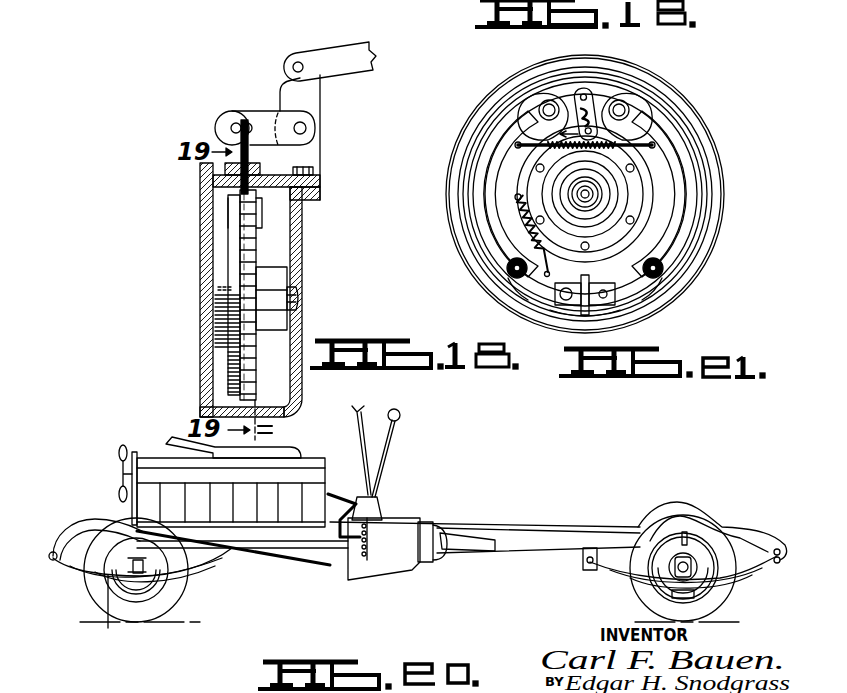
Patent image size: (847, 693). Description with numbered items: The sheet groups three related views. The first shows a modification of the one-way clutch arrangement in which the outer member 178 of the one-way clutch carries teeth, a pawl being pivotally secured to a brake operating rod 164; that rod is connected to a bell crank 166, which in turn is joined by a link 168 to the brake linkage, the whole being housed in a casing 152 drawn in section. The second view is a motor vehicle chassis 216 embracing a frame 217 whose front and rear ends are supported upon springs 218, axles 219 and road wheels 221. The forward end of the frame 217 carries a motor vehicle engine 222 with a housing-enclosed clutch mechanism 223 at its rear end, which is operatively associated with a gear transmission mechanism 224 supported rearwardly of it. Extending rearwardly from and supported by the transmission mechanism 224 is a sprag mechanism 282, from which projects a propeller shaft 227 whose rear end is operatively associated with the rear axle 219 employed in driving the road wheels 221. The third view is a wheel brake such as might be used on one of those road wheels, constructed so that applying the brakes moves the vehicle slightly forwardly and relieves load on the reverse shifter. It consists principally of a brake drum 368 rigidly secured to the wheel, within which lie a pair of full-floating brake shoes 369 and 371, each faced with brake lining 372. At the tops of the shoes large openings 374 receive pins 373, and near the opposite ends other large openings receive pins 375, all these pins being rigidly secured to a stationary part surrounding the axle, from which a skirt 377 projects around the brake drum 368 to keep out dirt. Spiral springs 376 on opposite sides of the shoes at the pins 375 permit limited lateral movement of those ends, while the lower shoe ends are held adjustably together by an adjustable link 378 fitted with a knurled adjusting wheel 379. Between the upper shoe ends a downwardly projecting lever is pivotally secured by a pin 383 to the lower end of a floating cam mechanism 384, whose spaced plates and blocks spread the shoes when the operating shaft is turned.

In FIG. 18, the housing 152 is at (224, 303).
In FIG. 18, the brake operating rod 164 is at (242, 120).
In FIG. 18, the bell crank 166 is at (312, 96).
In FIG. 18, the link 168 is at (320, 58).
In FIG. 18, the outer member of the one-way clutch 178 is at (250, 251).
In FIG. 21, the brake drum 368 is at (656, 92).
In FIG. 21, the brake shoe 369 is at (488, 220).
In FIG. 21, the brake shoe 371 is at (680, 216).
In FIG. 21, the brake lining 372 is at (672, 116).
In FIG. 21, the pins 373 is at (528, 120).
In FIG. 21, the large openings 374 is at (556, 100).
In FIG. 21, the pins 375 is at (512, 276).
In FIG. 21, the spiral springs 376 is at (508, 265).
In FIG. 21, the skirt 377 is at (712, 144).
In FIG. 21, the adjustable link 378 is at (576, 314).
In FIG. 21, the knurled adjusting wheel 379 is at (602, 312).
In FIG. 21, the pin 383 is at (548, 184).
In FIG. 21, the floating cam mechanism 384 is at (584, 88).
In FIG. 20, the motor vehicle chassis 216 is at (677, 510).
In FIG. 20, the frame 217 is at (563, 543).
In FIG. 20, the springs 218 is at (70, 566).
In FIG. 20, the axles 219 is at (108, 628).
In FIG. 20, the road wheels 221 is at (182, 591).
In FIG. 20, the motor vehicle engine 222 is at (304, 470).
In FIG. 20, the clutch mechanism 223 is at (331, 560).
In FIG. 20, the gear transmission mechanism 224 is at (388, 568).
In FIG. 20, the propeller shaft 227 is at (472, 536).
In FIG. 20, the sprag mechanism 282 is at (426, 522).